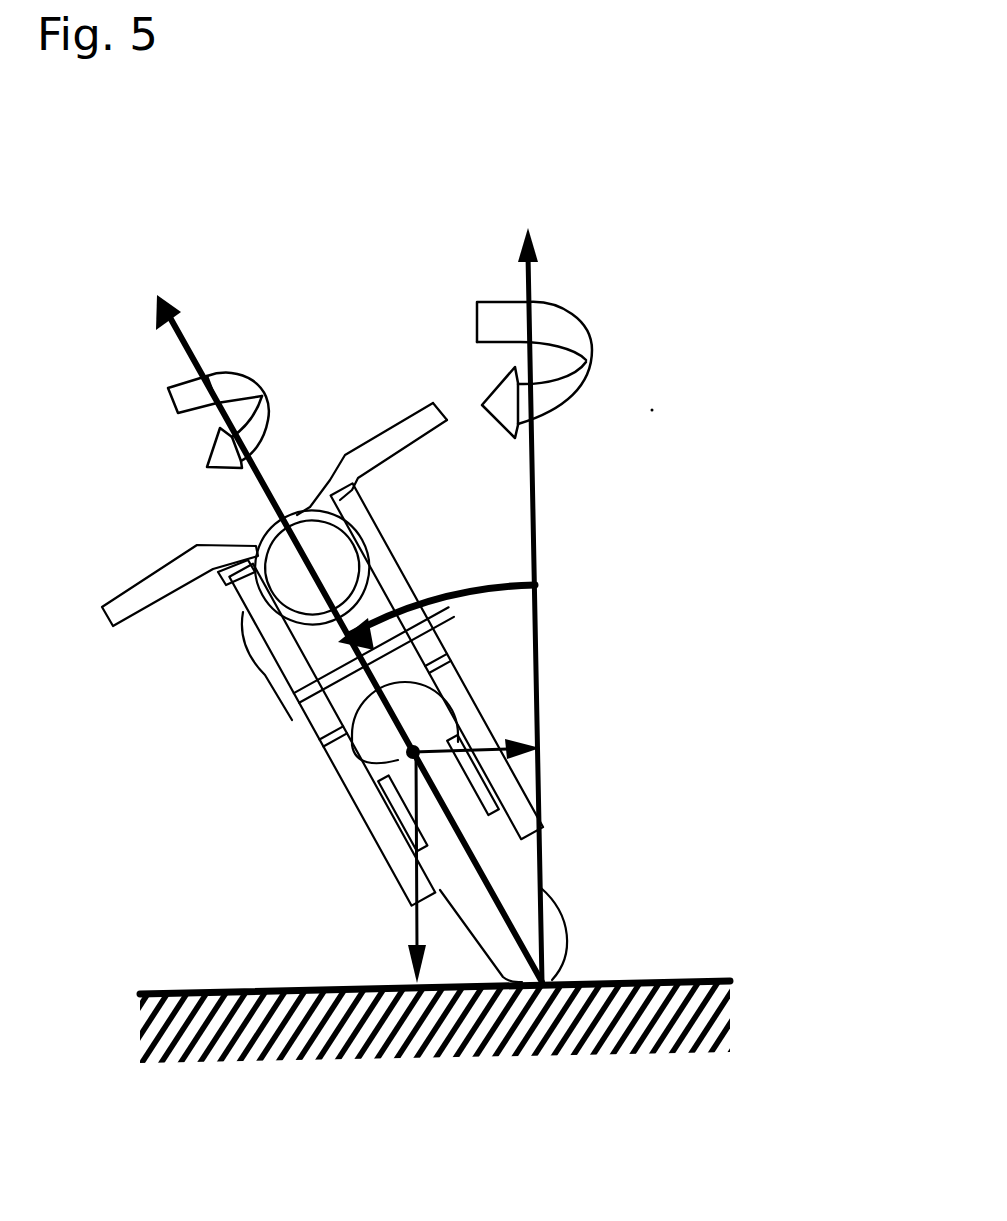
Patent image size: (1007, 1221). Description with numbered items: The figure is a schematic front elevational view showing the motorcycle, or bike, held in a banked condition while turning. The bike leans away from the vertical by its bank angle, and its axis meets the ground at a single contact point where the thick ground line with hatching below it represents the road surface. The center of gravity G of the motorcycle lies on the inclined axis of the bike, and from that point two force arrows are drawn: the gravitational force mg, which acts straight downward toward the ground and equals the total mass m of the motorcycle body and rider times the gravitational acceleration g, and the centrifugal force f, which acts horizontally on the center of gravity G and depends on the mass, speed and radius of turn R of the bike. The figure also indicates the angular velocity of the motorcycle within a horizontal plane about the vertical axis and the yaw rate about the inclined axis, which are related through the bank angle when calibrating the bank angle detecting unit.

The center of gravity G is at (412, 752).
The centrifugal force f is at (552, 744).
The gravitational force mg is at (363, 867).
The motorcycle bike is at (334, 692).
The road surface ground is at (446, 1027).